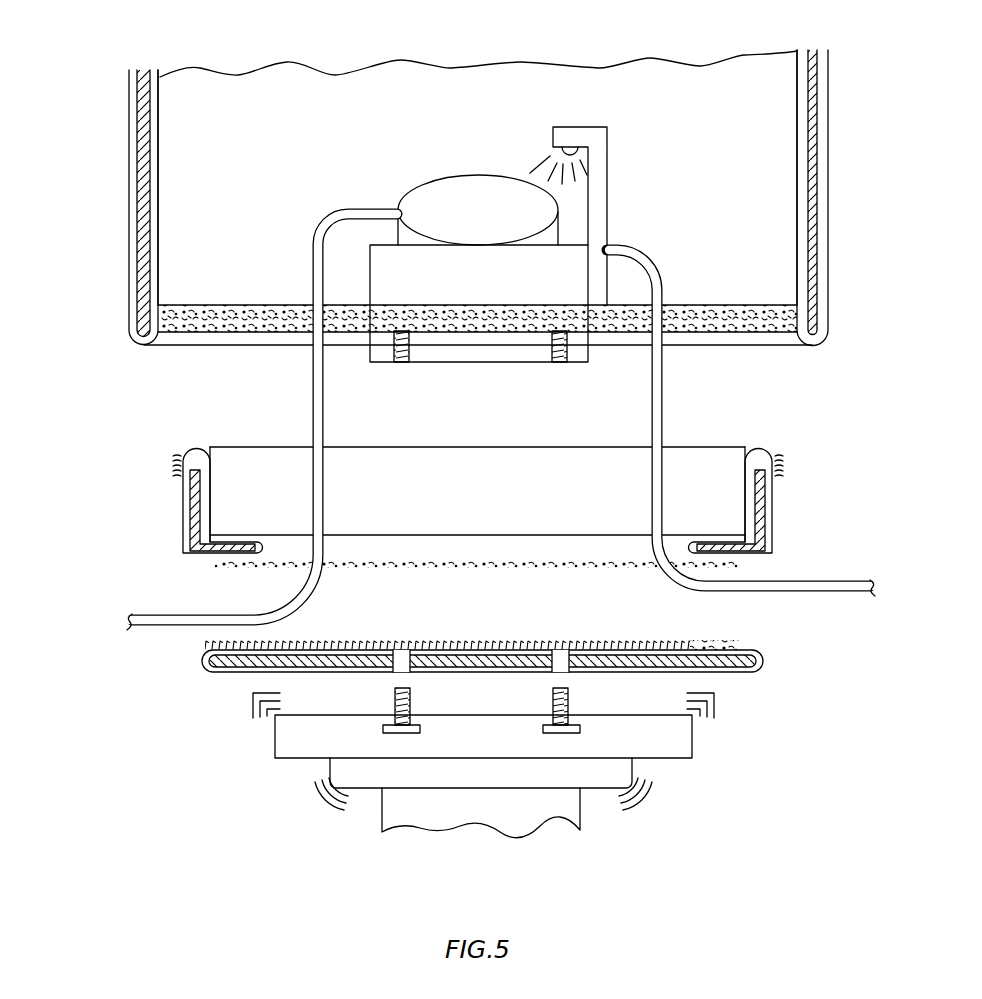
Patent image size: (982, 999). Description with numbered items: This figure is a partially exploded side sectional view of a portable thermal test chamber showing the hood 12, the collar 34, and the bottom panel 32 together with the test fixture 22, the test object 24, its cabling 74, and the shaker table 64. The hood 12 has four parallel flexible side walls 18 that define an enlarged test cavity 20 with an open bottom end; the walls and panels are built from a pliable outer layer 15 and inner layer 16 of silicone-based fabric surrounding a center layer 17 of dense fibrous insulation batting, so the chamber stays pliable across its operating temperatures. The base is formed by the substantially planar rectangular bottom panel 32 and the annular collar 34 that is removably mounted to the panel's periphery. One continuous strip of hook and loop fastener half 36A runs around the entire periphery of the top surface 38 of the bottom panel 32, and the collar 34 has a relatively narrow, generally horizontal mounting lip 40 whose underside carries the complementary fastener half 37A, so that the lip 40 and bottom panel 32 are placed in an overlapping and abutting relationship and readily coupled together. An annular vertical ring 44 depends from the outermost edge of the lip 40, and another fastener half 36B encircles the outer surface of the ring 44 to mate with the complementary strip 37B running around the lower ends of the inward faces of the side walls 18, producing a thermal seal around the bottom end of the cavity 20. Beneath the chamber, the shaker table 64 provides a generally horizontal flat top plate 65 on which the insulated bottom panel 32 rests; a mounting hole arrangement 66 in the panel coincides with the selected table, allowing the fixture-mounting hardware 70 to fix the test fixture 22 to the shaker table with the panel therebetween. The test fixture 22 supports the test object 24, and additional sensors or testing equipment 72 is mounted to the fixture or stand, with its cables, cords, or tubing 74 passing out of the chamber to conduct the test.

The hood 12 is at (104, 226).
The outer layer 15 is at (128, 308).
The inner layer 16 is at (348, 98).
The center layer 17 is at (150, 265).
The side walls 18 is at (122, 143).
The test cavity 20 is at (262, 97).
The test fixture 22 is at (478, 362).
The test object 24 is at (462, 180).
The bottom panel 32 is at (720, 673).
The collar 34 is at (776, 511).
The fastener half 36A is at (728, 640).
The fastener half 36B is at (790, 468).
The fastener half 37A is at (728, 568).
The fastener half 37B is at (780, 322).
The top surface 38 is at (617, 638).
The mounting lip 40 is at (708, 535).
The ring 44 is at (742, 472).
The shaker table 64 is at (556, 828).
The top plate 65 is at (692, 742).
The mounting hole arrangement 66 is at (393, 637).
The fixture-mounting hardware 70 is at (412, 700).
The testing equipment 72 is at (612, 152).
The cabling 74 is at (325, 400).